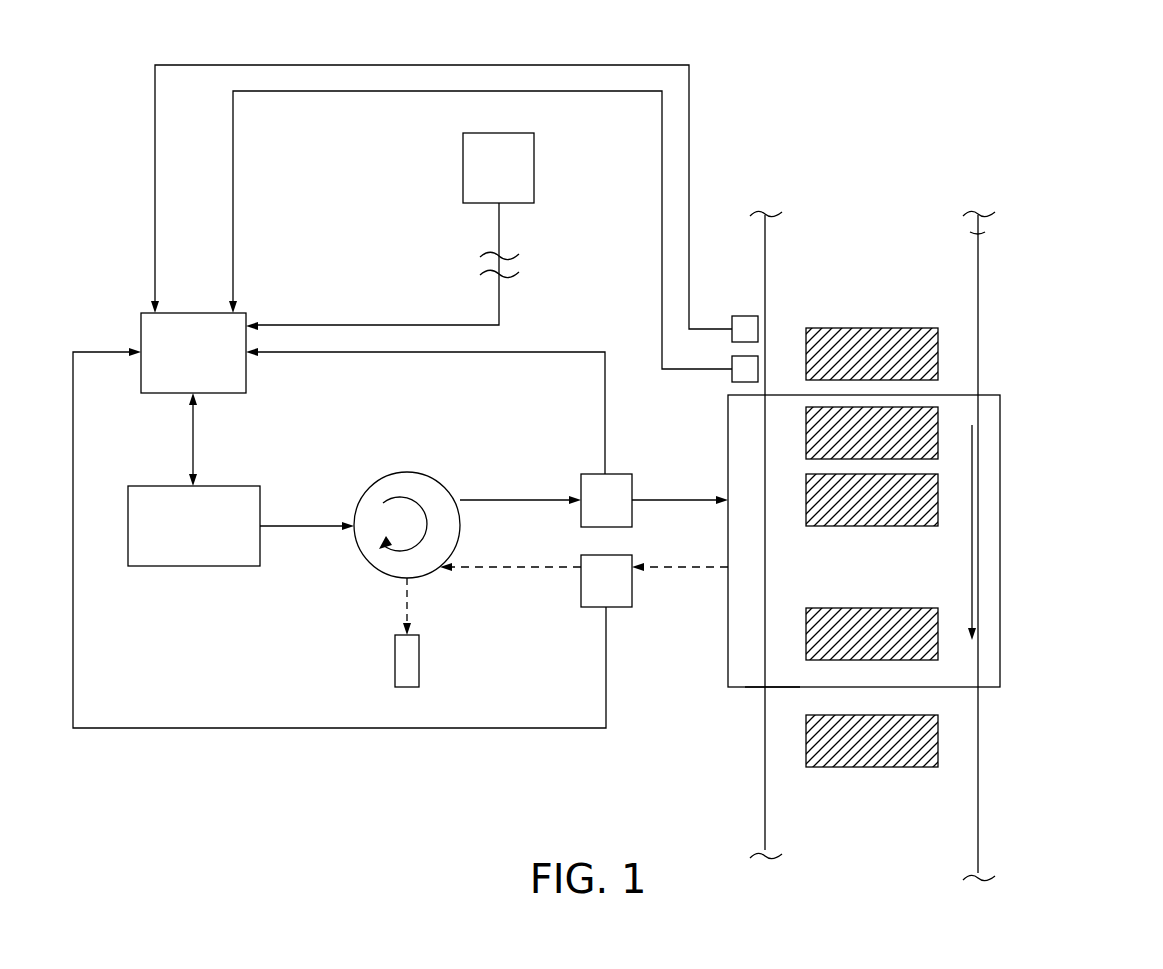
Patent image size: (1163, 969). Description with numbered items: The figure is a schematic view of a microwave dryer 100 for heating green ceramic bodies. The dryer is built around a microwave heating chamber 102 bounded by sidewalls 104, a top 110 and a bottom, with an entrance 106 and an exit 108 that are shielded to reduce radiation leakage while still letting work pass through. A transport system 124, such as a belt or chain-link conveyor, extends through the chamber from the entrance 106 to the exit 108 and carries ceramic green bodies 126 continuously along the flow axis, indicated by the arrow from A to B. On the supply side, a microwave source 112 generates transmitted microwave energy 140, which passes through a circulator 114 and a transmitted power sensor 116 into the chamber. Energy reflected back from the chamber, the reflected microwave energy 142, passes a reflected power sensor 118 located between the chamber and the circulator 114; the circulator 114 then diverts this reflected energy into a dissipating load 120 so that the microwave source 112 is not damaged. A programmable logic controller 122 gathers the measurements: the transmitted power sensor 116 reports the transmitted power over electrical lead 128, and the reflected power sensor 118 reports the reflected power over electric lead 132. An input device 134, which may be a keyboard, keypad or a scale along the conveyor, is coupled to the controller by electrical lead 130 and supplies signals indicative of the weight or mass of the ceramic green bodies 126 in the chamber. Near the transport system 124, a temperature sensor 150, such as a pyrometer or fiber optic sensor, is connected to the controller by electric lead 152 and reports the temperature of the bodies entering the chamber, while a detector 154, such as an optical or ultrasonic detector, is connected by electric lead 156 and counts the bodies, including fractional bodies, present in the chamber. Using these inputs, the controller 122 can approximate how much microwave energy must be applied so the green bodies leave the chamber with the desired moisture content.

The microwave dryer 100 is at (898, 172).
The microwave heating chamber 102 is at (1058, 416).
The sidewalls 104 is at (728, 590).
The entrance 106 is at (955, 395).
The exit 108 is at (793, 687).
The top 110 is at (902, 572).
The microwave source 112 is at (218, 486).
The circulator 114 is at (405, 472).
The transmitted power sensor 116 is at (618, 474).
The reflected power sensor 118 is at (596, 607).
The dissipating load 120 is at (419, 660).
The programmable logic controller 122 is at (185, 313).
The transport system 124 is at (976, 250).
The ceramic green bodies 126 is at (870, 328).
The electrical lead 128 is at (545, 352).
The electrical lead 130 is at (372, 325).
The electric lead 132 is at (332, 728).
The input device 134 is at (534, 165).
The transmitted microwave energy 140 is at (292, 526).
The reflected microwave energy 142 is at (503, 567).
The temperature sensor 150 is at (730, 376).
The electric lead 152 is at (662, 188).
The detector 154 is at (742, 316).
The electric lead 156 is at (689, 147).